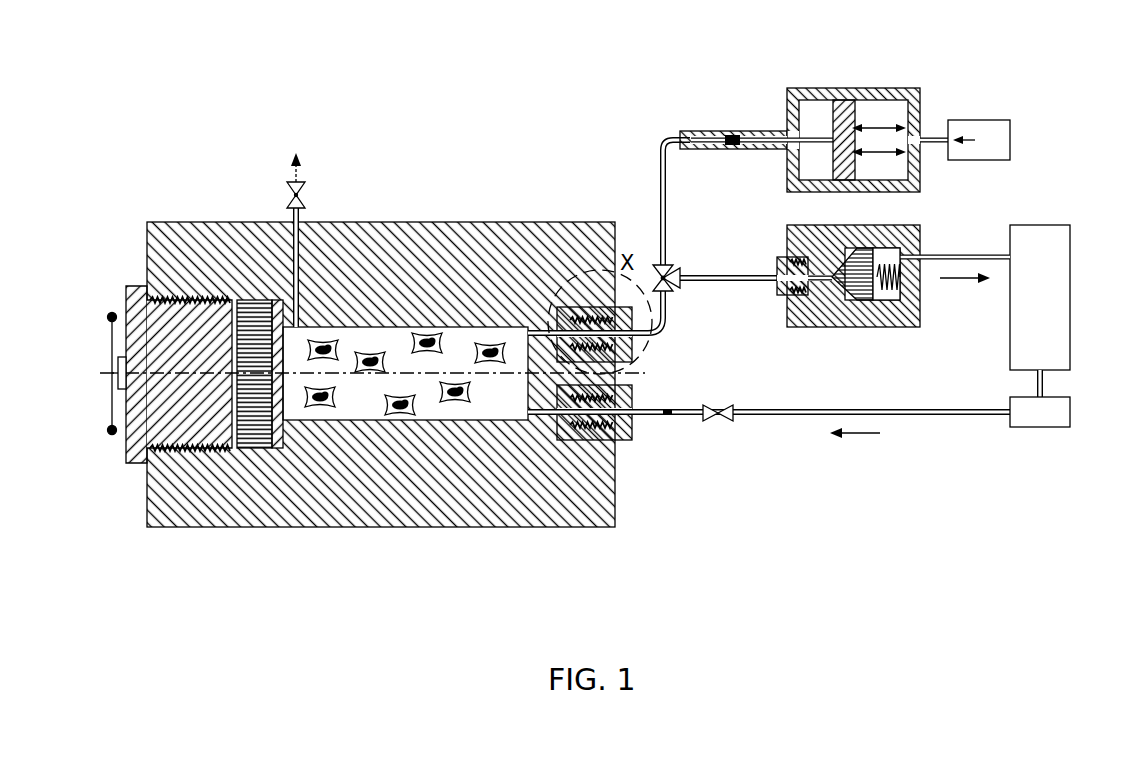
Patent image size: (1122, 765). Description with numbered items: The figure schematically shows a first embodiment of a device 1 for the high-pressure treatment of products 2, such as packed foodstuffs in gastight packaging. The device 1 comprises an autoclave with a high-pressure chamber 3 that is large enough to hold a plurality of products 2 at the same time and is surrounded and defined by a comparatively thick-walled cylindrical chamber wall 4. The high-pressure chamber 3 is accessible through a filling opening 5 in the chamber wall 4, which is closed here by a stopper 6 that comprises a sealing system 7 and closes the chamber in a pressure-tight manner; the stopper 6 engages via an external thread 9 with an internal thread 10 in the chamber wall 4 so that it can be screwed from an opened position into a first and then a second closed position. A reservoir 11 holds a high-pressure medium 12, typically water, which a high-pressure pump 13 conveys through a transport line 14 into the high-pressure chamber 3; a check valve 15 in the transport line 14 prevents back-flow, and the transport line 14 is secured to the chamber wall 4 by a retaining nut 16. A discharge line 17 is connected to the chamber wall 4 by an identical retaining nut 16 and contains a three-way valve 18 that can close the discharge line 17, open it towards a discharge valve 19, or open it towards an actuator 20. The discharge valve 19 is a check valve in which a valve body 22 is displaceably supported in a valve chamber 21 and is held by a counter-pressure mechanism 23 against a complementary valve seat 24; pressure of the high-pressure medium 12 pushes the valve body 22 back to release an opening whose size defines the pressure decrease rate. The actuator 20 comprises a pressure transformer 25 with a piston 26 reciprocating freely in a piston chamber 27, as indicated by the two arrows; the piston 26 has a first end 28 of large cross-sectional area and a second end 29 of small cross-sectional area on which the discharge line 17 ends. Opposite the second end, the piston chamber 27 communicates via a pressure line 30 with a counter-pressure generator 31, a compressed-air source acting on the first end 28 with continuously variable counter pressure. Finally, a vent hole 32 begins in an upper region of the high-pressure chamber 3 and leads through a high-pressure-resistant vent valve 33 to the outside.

The device 1 is at (156, 78).
The products 2 is at (375, 408).
The high-pressure chamber 3 is at (483, 412).
The chamber wall 4 is at (523, 483).
The filling opening 5 is at (100, 392).
The stopper 6 is at (140, 435).
The sealing system 7 is at (253, 433).
The external thread 9 is at (151, 412).
The internal thread 10 is at (183, 450).
The reservoir 11 is at (1062, 297).
The high-pressure medium 12 is at (1071, 355).
The high-pressure pump 13 is at (1030, 420).
The transport line 14 is at (915, 418).
The check valve 15 is at (716, 424).
The retaining nut 16 is at (645, 350).
The discharge line 17 is at (660, 333).
The three-way valve 18 is at (667, 265).
The discharge valve 19 is at (872, 280).
The actuator 20 is at (866, 108).
The valve chamber 21 is at (888, 302).
The valve body 22 is at (865, 303).
The counter-pressure mechanism 23 is at (905, 290).
The valve seat 24 is at (880, 250).
The pressure transformer 25 is at (878, 75).
The piston 26 is at (848, 100).
The piston chamber 27 is at (893, 110).
The first end 28 is at (857, 168).
The second end 29 is at (730, 133).
The pressure line 30 is at (936, 132).
The counter-pressure generator 31 is at (1001, 134).
The vent hole 32 is at (305, 267).
The vent valve 33 is at (305, 185).